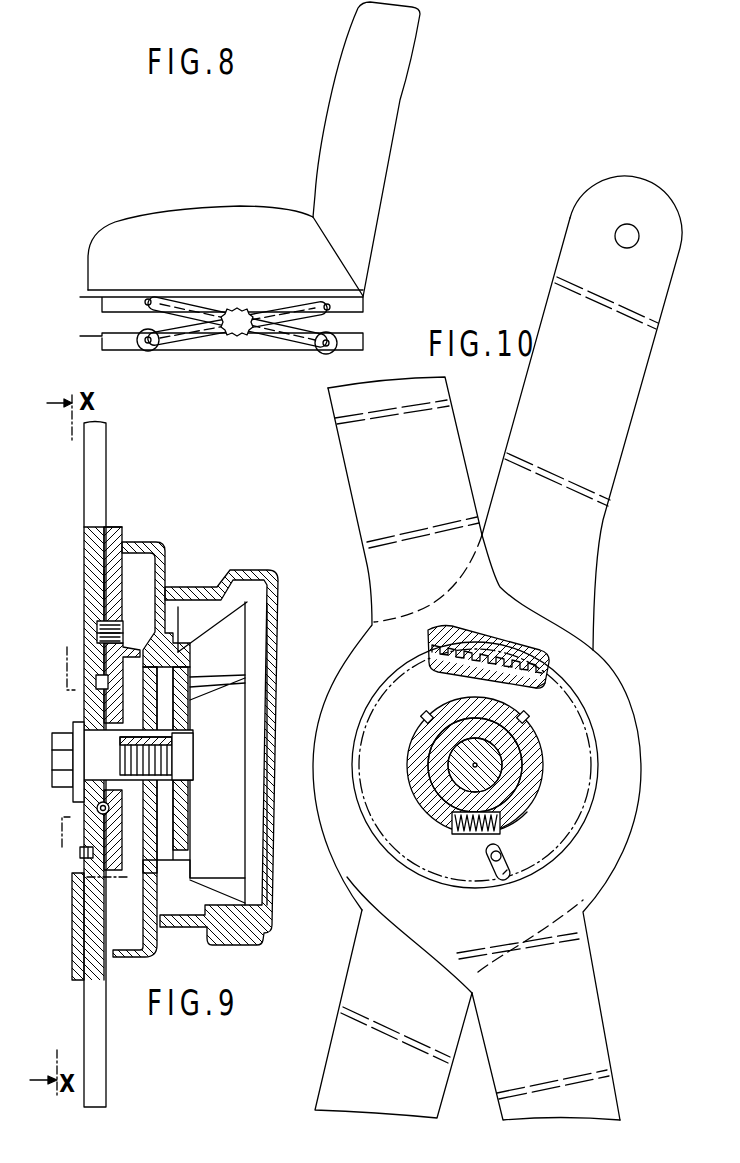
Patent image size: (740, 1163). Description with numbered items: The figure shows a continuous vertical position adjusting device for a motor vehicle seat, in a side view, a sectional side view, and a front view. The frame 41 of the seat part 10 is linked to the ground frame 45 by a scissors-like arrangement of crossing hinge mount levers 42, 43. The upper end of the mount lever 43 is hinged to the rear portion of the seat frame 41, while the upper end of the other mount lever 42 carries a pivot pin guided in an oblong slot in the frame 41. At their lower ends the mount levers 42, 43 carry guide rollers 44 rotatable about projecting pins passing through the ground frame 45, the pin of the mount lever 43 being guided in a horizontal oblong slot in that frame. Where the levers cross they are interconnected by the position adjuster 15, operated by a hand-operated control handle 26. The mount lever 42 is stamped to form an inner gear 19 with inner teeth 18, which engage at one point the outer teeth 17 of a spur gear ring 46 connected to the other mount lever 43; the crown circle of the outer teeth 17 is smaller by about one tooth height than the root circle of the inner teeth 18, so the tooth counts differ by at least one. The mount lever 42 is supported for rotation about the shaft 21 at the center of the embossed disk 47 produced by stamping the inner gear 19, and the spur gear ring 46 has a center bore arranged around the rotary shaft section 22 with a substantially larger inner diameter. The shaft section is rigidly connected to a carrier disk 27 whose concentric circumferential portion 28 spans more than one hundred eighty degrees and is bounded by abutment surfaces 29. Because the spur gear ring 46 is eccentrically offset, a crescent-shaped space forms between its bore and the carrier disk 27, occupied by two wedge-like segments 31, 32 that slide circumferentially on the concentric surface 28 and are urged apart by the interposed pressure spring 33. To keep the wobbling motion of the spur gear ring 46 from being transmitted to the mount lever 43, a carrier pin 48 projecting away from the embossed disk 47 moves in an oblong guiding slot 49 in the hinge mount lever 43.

In FIG. 8, the seat part 10 is at (150, 218).
In FIG. 8, the position adjuster 15 is at (237, 285).
In FIG. 9, the outer teeth 17 is at (110, 643).
In FIG. 10, the outer teeth 17 is at (428, 664).
In FIG. 9, the inner teeth 18 is at (112, 623).
In FIG. 10, the inner teeth 18 is at (467, 630).
In FIG. 9, the inner gear 19 is at (108, 583).
In FIG. 9, the shaft 21 is at (80, 773).
In FIG. 9, the rotary shaft section 22 is at (100, 795).
In FIG. 10, the rotary shaft section 22 is at (465, 752).
In FIG. 9, the hand-operated control handle 26 is at (240, 576).
In FIG. 9, the carrier disk 27 is at (105, 714).
In FIG. 10, the carrier disk 27 is at (513, 773).
In FIG. 10, the concentric circumferential portion 28 is at (430, 790).
In FIG. 10, the abutment surfaces 29 is at (430, 727).
In FIG. 10, the wedge-like segment 31 is at (410, 768).
In FIG. 10, the wedge-like segment 32 is at (530, 795).
In FIG. 10, the pressure spring 33 is at (470, 836).
In FIG. 8, the frame 41 is at (102, 298).
In FIG. 8, the mount lever 42 is at (205, 305).
In FIG. 9, the mount lever 42 is at (122, 546).
In FIG. 10, the mount lever 42 is at (380, 980).
In FIG. 8, the mount lever 43 is at (298, 305).
In FIG. 9, the mount lever 43 is at (86, 923).
In FIG. 10, the mount lever 43 is at (352, 456).
In FIG. 8, the guide rollers 44 is at (150, 354).
In FIG. 8, the ground frame 45 is at (102, 338).
In FIG. 9, the spur gear ring 46 is at (100, 683).
In FIG. 10, the spur gear ring 46 is at (540, 676).
In FIG. 9, the embossed disk 47 is at (160, 705).
In FIG. 9, the carrier pin 48 is at (82, 853).
In FIG. 10, the carrier pin 48 is at (507, 857).
In FIG. 10, the oblong guiding slot 49 is at (508, 874).